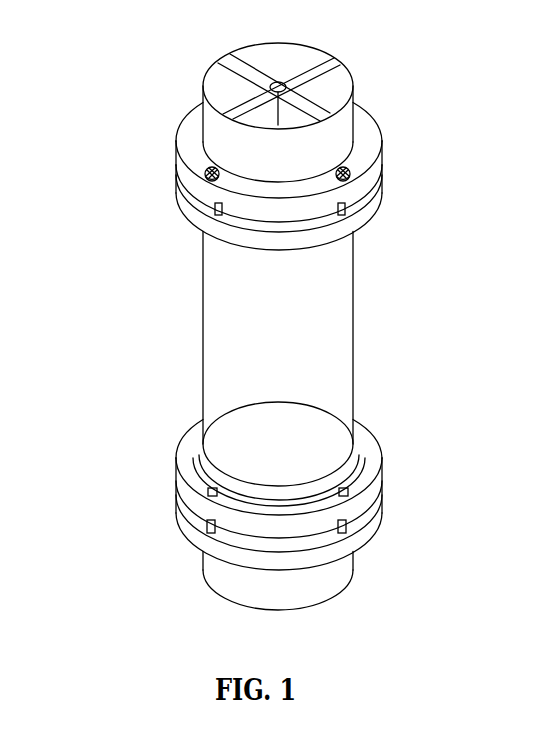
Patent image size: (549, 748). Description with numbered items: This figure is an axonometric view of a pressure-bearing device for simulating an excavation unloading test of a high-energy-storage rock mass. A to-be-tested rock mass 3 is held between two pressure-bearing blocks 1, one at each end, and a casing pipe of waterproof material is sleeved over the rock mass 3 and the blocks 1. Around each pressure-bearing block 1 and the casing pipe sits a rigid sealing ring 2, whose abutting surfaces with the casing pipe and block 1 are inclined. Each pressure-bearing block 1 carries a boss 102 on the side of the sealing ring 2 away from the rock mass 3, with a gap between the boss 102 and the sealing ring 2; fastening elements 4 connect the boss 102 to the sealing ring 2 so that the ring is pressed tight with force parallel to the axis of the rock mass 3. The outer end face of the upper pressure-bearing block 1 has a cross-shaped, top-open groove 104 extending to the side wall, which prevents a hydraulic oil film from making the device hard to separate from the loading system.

The pressure-bearing block 1 is at (228, 91).
The groove 104 is at (315, 60).
The boss 102 is at (242, 153).
The sealing ring 2 is at (242, 222).
The to-be-tested rock mass 3 is at (228, 359).
The fastening element 4 is at (242, 515).